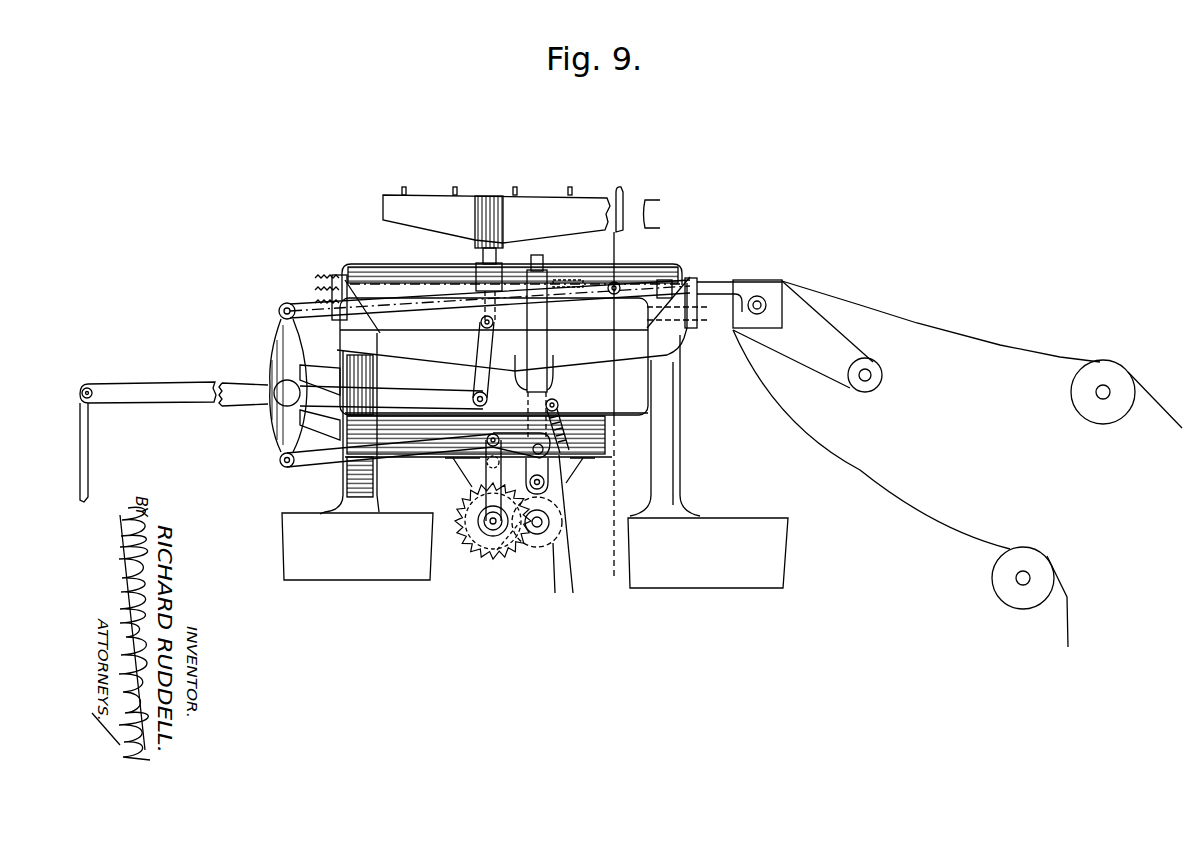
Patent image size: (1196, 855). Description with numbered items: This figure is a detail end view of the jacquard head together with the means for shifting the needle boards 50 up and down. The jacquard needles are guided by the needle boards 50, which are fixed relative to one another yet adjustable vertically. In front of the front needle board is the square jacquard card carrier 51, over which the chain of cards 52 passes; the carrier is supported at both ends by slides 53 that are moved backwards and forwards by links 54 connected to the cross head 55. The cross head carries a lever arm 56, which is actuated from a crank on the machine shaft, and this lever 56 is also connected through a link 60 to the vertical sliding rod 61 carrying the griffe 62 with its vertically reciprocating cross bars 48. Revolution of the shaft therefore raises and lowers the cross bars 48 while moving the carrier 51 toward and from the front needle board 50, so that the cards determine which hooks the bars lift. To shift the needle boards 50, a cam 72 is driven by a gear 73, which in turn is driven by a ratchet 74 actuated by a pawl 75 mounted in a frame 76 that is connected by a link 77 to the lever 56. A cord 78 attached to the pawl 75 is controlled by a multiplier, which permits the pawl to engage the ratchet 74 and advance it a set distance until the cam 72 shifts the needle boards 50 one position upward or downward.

The cross bars 48 is at (404, 188).
The needle boards 50 is at (690, 280).
The jacquard card carrier 51 is at (780, 285).
The chain of cards 52 is at (782, 400).
The slides 53 is at (718, 284).
The links 54 is at (305, 300).
The cross head 55 is at (287, 341).
The lever arm 56 is at (153, 380).
The link 60 is at (482, 356).
The vertical sliding rod 61 is at (484, 257).
The griffe 62 is at (440, 200).
The cam 72 is at (556, 545).
The gear 73 is at (504, 552).
The ratchet 74 is at (482, 556).
The pawl 75 is at (468, 474).
The frame 76 is at (490, 492).
The link 77 is at (315, 462).
The cord 78 is at (572, 560).